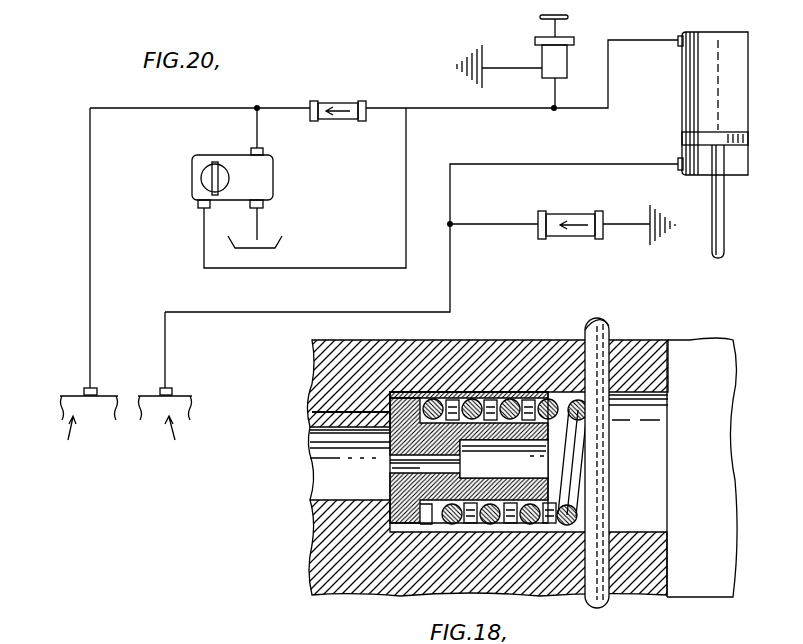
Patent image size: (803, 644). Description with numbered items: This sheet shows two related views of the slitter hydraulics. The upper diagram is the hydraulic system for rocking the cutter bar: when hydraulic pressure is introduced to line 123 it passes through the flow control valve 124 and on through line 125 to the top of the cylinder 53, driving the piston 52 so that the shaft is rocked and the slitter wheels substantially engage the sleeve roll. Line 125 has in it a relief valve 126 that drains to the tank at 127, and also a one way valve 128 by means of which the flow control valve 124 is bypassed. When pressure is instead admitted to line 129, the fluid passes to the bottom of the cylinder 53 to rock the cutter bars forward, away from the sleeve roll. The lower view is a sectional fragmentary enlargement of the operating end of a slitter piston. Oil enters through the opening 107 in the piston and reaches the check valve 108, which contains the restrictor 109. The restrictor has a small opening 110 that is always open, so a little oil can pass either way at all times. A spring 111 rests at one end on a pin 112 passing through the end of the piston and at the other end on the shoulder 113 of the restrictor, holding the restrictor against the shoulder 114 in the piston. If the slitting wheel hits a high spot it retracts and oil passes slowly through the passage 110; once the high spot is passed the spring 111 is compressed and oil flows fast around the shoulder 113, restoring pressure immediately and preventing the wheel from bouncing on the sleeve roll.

In FIG. 20, the piston 52 is at (724, 233).
In FIG. 20, the cylinder 53 is at (682, 80).
In FIG. 18, the opening 107 is at (308, 482).
In FIG. 18, the check valve 108 is at (470, 505).
In FIG. 18, the restrictor 109 is at (390, 485).
In FIG. 18, the opening 110 is at (446, 468).
In FIG. 18, the spring 111 is at (577, 488).
In FIG. 18, the pin 112 is at (630, 318).
In FIG. 18, the shoulder 113 is at (425, 392).
In FIG. 18, the shoulder 114 is at (312, 412).
In FIG. 20, the line 123 is at (88, 348).
In FIG. 20, the flow control valve 124 is at (277, 183).
In FIG. 20, the line 125 is at (338, 268).
In FIG. 20, the relief valve 126 is at (553, 67).
In FIG. 20, the tank drain 127 is at (486, 48).
In FIG. 20, the one way valve 128 is at (345, 101).
In FIG. 20, the line 129 is at (167, 338).